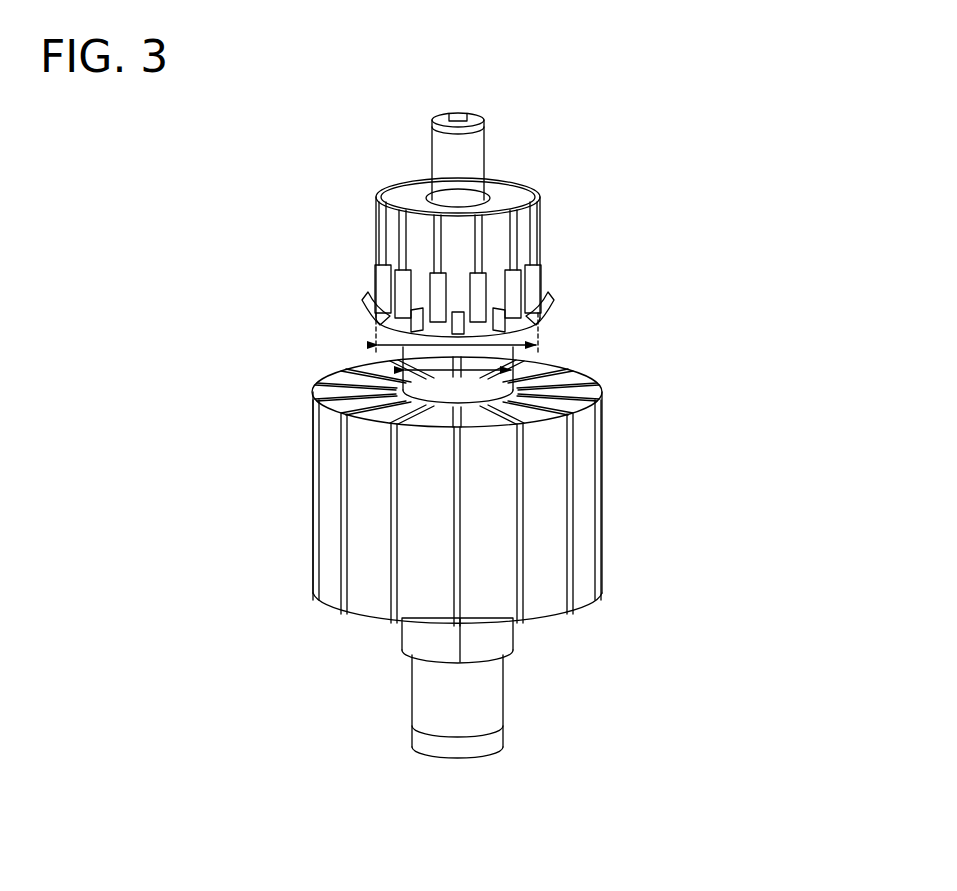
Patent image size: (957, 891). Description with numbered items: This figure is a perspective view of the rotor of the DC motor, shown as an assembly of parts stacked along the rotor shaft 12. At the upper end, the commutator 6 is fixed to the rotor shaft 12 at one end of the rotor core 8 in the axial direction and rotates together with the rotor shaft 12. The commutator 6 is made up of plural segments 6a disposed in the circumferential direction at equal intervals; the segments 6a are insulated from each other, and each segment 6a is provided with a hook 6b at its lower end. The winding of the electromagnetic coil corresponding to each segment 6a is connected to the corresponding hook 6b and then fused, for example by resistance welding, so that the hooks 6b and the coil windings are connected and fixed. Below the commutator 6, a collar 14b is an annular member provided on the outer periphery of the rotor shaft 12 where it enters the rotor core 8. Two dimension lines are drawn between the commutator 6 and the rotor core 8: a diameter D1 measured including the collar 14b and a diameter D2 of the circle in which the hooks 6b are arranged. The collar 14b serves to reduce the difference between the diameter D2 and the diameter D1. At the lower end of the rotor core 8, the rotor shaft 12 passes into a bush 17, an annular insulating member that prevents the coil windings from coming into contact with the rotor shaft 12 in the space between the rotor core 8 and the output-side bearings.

The rotor shaft 12 is at (468, 148).
The commutator 6 is at (465, 257).
The segments 6a is at (415, 233).
The hook 6b is at (372, 305).
The collar 14b is at (425, 392).
The rotor core 8 is at (582, 462).
The bush 17 is at (497, 635).
The diameter including the collar D1 is at (352, 402).
The diameter of the circle in which the hooks are arranged D2 is at (398, 362).